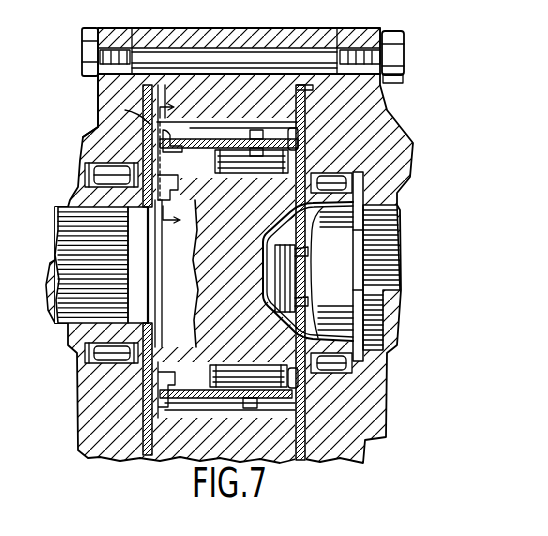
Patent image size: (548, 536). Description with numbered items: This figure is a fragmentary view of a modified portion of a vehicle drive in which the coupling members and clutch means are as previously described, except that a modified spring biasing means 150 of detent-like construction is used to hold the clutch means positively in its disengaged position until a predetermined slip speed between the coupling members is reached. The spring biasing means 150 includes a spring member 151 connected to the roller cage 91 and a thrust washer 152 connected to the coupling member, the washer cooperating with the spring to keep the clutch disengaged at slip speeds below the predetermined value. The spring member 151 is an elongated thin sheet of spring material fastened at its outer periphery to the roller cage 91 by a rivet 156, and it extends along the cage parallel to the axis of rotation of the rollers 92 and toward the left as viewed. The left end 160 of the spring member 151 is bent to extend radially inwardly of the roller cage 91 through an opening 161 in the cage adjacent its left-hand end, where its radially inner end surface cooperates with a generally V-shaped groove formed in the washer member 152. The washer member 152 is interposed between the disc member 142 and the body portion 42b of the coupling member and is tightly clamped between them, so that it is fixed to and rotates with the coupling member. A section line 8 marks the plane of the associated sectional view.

The spring biasing means 150 is at (116, 105).
The section line 8- 8 is at (172, 163).
The spring member 151 is at (185, 126).
The roller cage 91 is at (227, 128).
The rivet 156 is at (256, 127).
The opening 161 is at (205, 167).
The thrust washer 152 is at (164, 195).
The rollers 92 is at (257, 173).
The body portion 42b is at (243, 289).
The disc member 142 is at (144, 402).
The left end of the spring member 160 is at (168, 412).